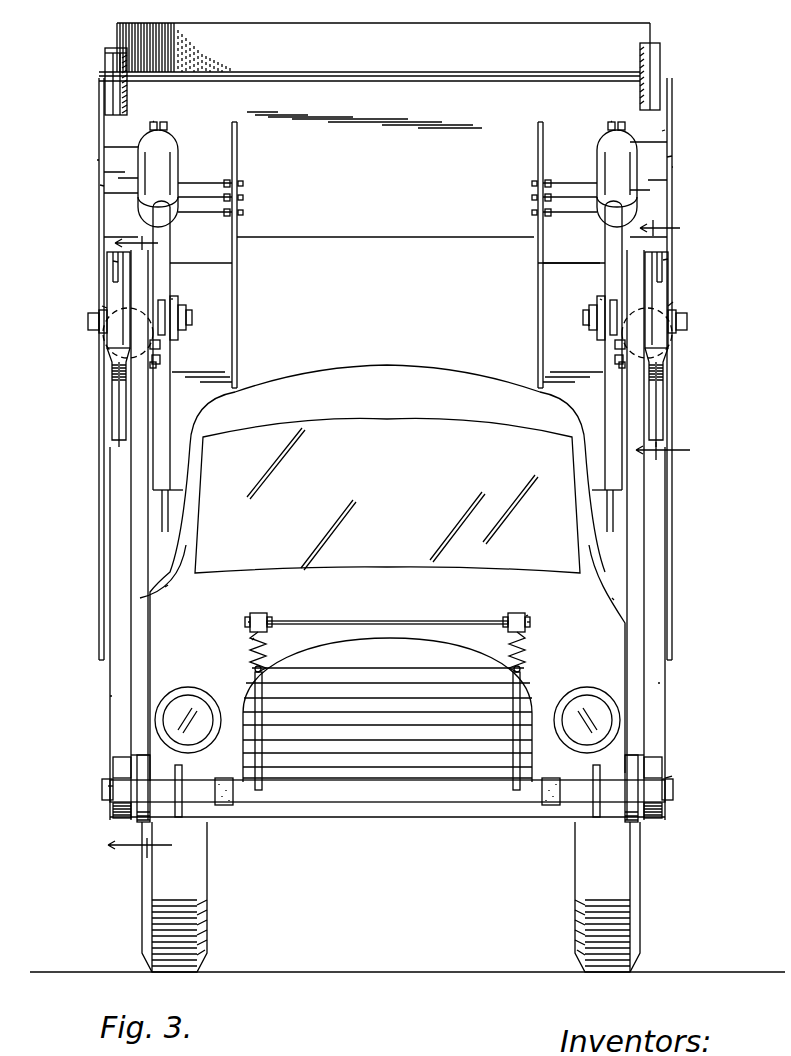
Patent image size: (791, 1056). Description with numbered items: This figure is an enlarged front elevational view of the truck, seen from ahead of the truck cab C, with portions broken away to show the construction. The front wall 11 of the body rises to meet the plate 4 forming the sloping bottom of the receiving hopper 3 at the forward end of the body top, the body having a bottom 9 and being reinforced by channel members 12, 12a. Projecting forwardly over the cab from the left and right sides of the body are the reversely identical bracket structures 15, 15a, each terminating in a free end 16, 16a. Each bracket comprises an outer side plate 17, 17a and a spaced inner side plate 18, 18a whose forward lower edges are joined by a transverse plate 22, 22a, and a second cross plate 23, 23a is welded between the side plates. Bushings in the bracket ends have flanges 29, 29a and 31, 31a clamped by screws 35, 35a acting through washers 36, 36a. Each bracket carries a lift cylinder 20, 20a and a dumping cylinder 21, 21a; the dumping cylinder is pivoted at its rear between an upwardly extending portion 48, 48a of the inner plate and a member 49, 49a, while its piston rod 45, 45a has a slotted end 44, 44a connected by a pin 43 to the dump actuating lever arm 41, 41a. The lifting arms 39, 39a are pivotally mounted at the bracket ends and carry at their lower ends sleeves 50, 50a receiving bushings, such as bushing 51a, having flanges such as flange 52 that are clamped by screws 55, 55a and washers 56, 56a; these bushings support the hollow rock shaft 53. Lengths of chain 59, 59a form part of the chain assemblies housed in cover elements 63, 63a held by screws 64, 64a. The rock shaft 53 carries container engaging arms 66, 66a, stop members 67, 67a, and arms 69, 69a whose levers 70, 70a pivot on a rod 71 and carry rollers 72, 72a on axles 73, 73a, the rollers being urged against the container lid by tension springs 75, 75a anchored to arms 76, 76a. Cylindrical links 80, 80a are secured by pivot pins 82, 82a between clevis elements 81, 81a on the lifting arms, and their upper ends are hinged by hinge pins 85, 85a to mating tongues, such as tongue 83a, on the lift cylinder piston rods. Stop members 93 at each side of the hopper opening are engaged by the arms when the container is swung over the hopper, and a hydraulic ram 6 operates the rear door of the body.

The receiving hopper 3 is at (545, 26).
The plate 4 is at (665, 130).
The hydraulic ram 6 is at (140, 546).
The bottom 9 is at (662, 346).
The front wall 11 is at (392, 296).
The channel members 12 is at (672, 540).
The channel member 12a is at (99, 612).
The first bracket structure 15 is at (678, 170).
The bracket 15a is at (91, 162).
The free end 16 is at (670, 345).
The free end 16a is at (106, 345).
The outer side plate 17 is at (672, 156).
The outer side plate 17a is at (100, 185).
The inner side plate 18 is at (600, 468).
The inner side plate 18a is at (165, 424).
The lift cylinder 20 is at (668, 382).
The lift cylinder 20a is at (107, 382).
The dumping cylinder 21 is at (592, 153).
The dumping cylinder 21a is at (178, 153).
The transverse plate 22 is at (614, 344).
The transverse plate 22a is at (161, 345).
The second cross plate 23 is at (665, 182).
The second cross plate 23a is at (112, 210).
The flange 29 is at (673, 302).
The flange 29a is at (102, 306).
The flange 31 is at (600, 299).
The flange 31a is at (172, 298).
The screws 35 is at (686, 320).
The screw 35a is at (88, 322).
The washers 36 is at (680, 312).
The washer 36a is at (90, 315).
The lifting arm 39 is at (660, 683).
The lifting arm 39a is at (110, 696).
The dump actuating lever arm 41 is at (614, 357).
The dump actuating lever arm 41a is at (161, 359).
The pin 43 is at (588, 326).
The slotted end 44 is at (598, 296).
The slotted end 44a is at (165, 292).
The piston rod 45 is at (604, 231).
The piston rod 45a is at (170, 233).
The upwardly extending portion 48 is at (606, 125).
The upwardly extending portion 48a is at (168, 126).
The member 49 is at (611, 121).
The member 49a is at (153, 121).
The sleeve 50 is at (660, 766).
The sleeve 50a is at (118, 770).
The bushing 51a is at (108, 786).
The flange 52 is at (672, 776).
The rock shaft 53 is at (385, 803).
The screw 55 is at (674, 790).
The screw 55a is at (102, 790).
The washer 56 is at (663, 806).
The washer 56a is at (113, 806).
The second length of chain 59 is at (640, 755).
The length of chain 59a is at (137, 756).
The cover element 63 is at (614, 600).
The cover element 63a is at (168, 585).
The screws 64 is at (615, 372).
The screw 64a is at (168, 500).
The container engaging arm 66 is at (595, 815).
The container engaging arm 66a is at (184, 815).
The stop member 67 is at (550, 806).
The stop member 67a is at (226, 806).
The arm 69 is at (525, 702).
The arm 69a is at (257, 759).
The lever 70 is at (528, 615).
The lever 70a is at (252, 640).
The rod 71 is at (400, 621).
The roller 72 is at (517, 612).
The roller 72a is at (259, 613).
The axle 73 is at (530, 622).
The axle 73a is at (248, 622).
The tension spring 75 is at (528, 650).
The tension spring 75a is at (252, 656).
The arm 76 is at (522, 674).
The arm 76a is at (255, 677).
The link 80 is at (660, 290).
The link 80a is at (115, 290).
The clevis elements 81 is at (662, 400).
The clevis element 81a is at (112, 400).
The pivot pin 82 is at (670, 372).
The pivot pin 82a is at (104, 376).
The tongue 83a is at (105, 66).
The hinge pin 85 is at (668, 259).
The hinge pin 85a is at (113, 261).
The stop members 93 is at (662, 60).
The truck cab C is at (383, 366).